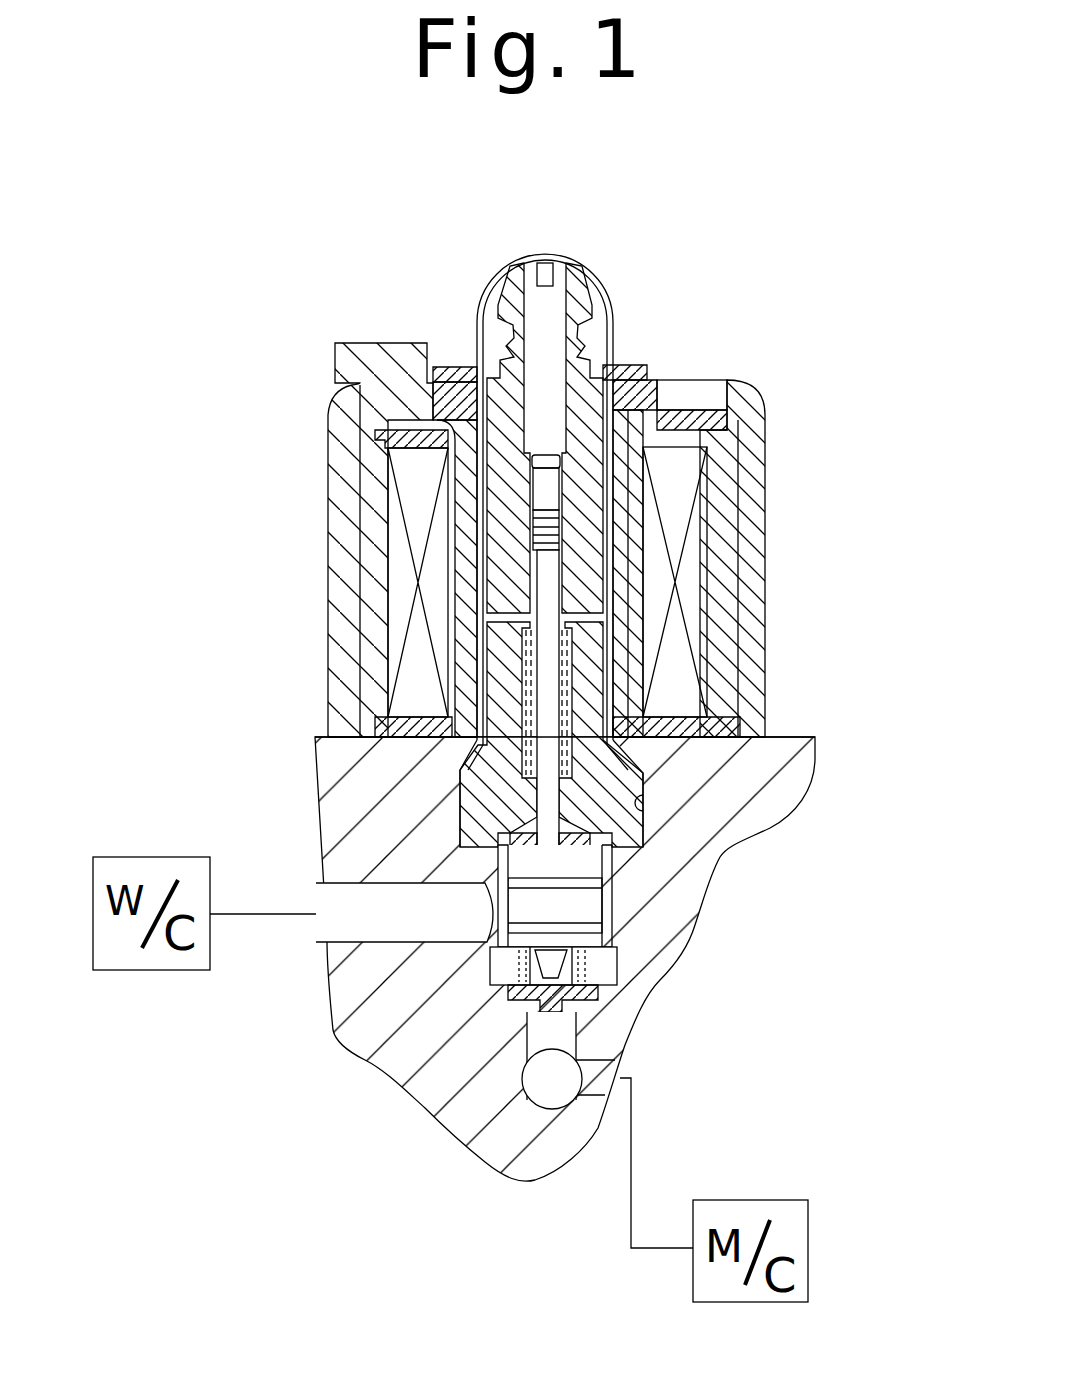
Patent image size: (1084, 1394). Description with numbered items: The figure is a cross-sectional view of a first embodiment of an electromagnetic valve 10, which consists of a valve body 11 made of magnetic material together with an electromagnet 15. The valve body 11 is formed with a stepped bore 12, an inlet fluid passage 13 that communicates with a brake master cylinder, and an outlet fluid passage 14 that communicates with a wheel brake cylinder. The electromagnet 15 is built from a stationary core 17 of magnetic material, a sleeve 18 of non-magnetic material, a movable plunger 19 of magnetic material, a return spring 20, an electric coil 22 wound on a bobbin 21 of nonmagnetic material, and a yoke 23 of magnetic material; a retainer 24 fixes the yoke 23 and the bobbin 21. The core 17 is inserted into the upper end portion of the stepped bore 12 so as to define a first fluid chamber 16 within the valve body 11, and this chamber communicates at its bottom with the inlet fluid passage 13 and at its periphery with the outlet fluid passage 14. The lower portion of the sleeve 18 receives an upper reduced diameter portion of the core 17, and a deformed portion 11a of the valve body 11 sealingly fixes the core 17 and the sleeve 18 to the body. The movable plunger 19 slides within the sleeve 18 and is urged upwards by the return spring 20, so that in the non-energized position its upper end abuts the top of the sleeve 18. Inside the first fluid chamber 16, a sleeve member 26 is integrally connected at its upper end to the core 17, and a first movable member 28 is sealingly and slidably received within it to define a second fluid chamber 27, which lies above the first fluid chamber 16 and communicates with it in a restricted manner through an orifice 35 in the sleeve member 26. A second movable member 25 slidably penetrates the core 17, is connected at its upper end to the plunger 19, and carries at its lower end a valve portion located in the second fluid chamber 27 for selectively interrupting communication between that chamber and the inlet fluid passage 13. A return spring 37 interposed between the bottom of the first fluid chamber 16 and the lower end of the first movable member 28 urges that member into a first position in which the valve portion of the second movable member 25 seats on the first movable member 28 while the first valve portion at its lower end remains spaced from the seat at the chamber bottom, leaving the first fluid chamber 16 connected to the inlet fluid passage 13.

The electromagnetic valve 10 is at (805, 440).
The valve body 11 is at (768, 803).
The deformed portion 11a is at (462, 760).
The stepped bore 12 is at (625, 800).
The inlet fluid passage 13 is at (565, 1040).
The outlet fluid passage 14 is at (382, 915).
The electromagnet 15 is at (763, 395).
The first fluid chamber 16 is at (507, 970).
The stationary core 17 is at (600, 765).
The sleeve 18 is at (608, 312).
The movable plunger 19 is at (500, 390).
The return spring 20 is at (573, 628).
The bobbin 21 is at (678, 433).
The electric coil 22 is at (690, 600).
The yoke 23 is at (750, 495).
The retainer 24 is at (630, 362).
The second movable member 25 is at (548, 578).
The sleeve member 26 is at (605, 880).
The second fluid chamber 27 is at (580, 857).
The first movable member 28 is at (527, 1035).
The orifice 35 is at (498, 868).
The return spring 37 is at (615, 968).